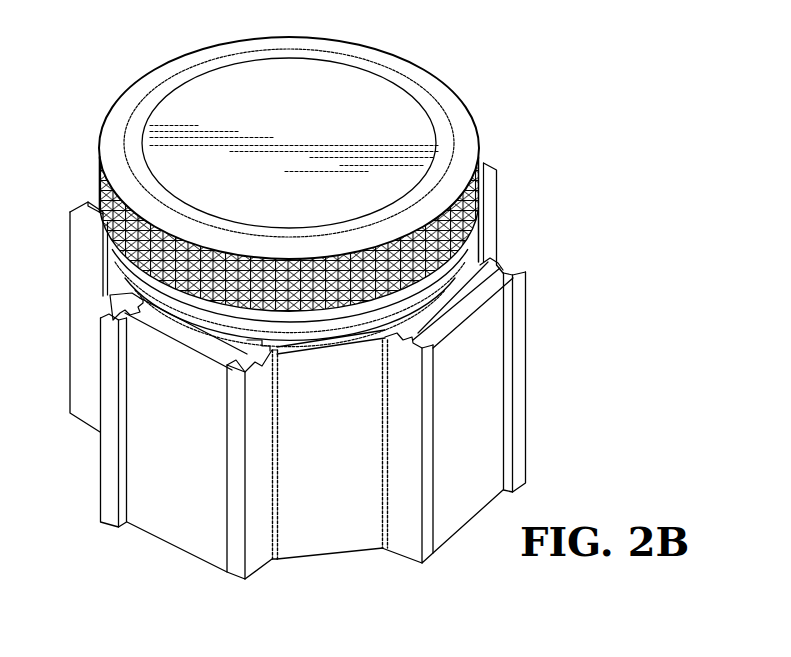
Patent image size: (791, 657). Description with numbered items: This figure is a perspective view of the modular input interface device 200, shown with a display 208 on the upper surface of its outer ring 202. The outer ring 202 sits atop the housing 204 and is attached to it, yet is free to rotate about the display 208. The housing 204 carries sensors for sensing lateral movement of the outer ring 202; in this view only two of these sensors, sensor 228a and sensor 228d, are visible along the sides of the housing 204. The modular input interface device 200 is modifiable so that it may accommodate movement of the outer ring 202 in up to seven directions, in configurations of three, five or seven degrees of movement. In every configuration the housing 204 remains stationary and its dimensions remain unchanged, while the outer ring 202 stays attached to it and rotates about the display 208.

The modular input interface device 200 is at (538, 154).
The outer ring 202 is at (103, 180).
The housing 204 is at (323, 503).
The display 208 is at (308, 89).
The sensor 228a is at (473, 377).
The sensor 228d is at (185, 470).